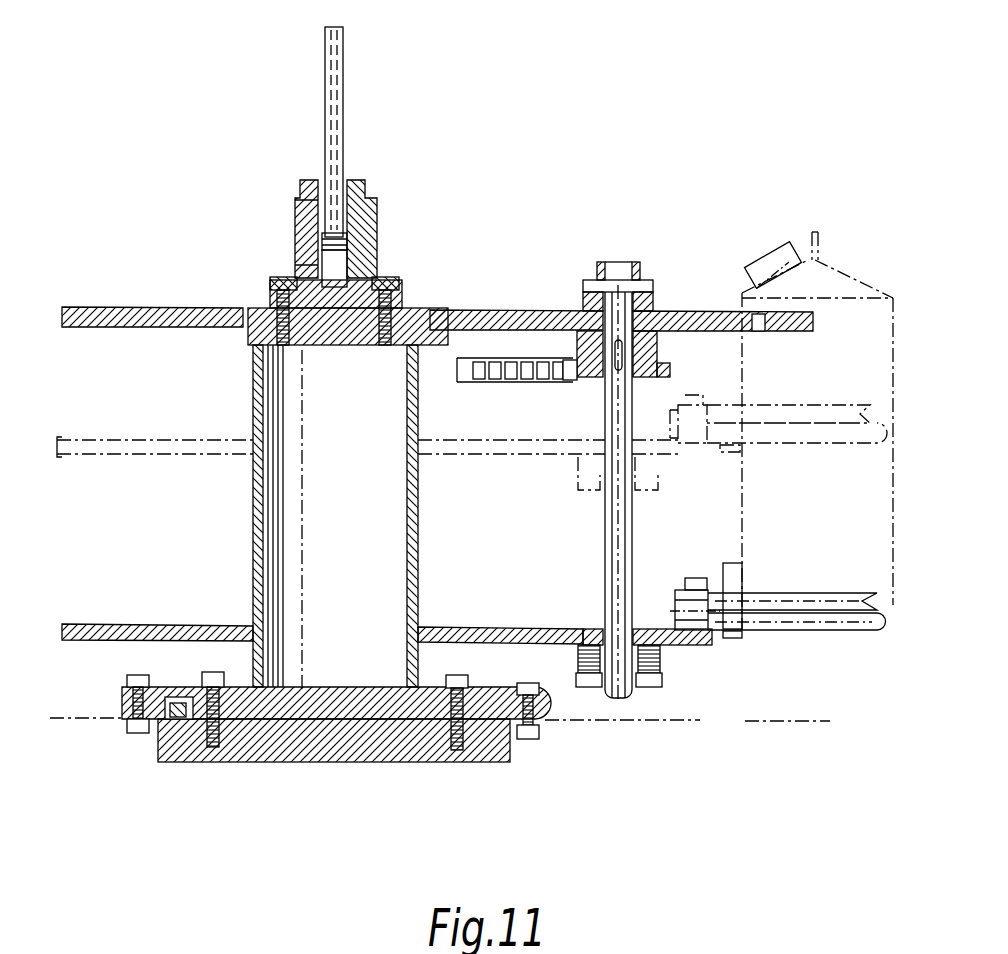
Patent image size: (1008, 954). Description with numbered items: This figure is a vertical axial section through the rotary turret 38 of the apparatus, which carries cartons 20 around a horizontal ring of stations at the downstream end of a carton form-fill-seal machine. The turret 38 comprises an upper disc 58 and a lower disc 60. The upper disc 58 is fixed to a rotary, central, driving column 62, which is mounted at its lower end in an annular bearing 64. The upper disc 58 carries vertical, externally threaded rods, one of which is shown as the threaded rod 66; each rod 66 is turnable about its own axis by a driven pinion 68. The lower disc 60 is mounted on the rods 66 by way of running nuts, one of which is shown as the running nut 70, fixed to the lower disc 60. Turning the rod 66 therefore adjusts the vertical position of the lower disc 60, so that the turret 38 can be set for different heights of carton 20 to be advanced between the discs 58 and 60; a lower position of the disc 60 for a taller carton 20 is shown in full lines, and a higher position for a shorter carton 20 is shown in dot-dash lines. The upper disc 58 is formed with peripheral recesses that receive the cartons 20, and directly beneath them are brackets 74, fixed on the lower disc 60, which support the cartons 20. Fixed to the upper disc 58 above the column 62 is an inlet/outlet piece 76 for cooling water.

The carton 20 is at (882, 292).
The rotary turret 38 is at (226, 176).
The upper disc 58 is at (512, 311).
The lower disc 60 is at (118, 622).
The central driving column 62 is at (252, 407).
The annular bearing 64 is at (543, 707).
The externally threaded rod 66 is at (608, 547).
The driven pinion 68 is at (657, 353).
The running nut 70 is at (660, 658).
The bracket 74 is at (833, 597).
The inlet/outlet piece 76 is at (372, 232).